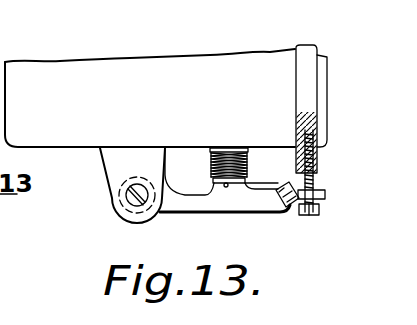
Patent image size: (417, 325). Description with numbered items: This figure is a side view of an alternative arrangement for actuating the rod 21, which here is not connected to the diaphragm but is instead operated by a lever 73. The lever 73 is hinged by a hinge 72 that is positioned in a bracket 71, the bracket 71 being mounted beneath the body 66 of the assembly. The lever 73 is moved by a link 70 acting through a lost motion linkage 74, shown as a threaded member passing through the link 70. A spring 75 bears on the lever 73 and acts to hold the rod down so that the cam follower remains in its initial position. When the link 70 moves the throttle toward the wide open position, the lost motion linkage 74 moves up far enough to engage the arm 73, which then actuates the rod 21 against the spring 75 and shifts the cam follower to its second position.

The housing block 66 is at (80, 68).
The link 70 is at (305, 45).
The rod 21 is at (237, 147).
The bracket 71 is at (105, 165).
The hinge 72 is at (127, 196).
The spring 75 is at (205, 168).
The lost motion linkage 74 is at (313, 192).
The lever 73 is at (216, 213).